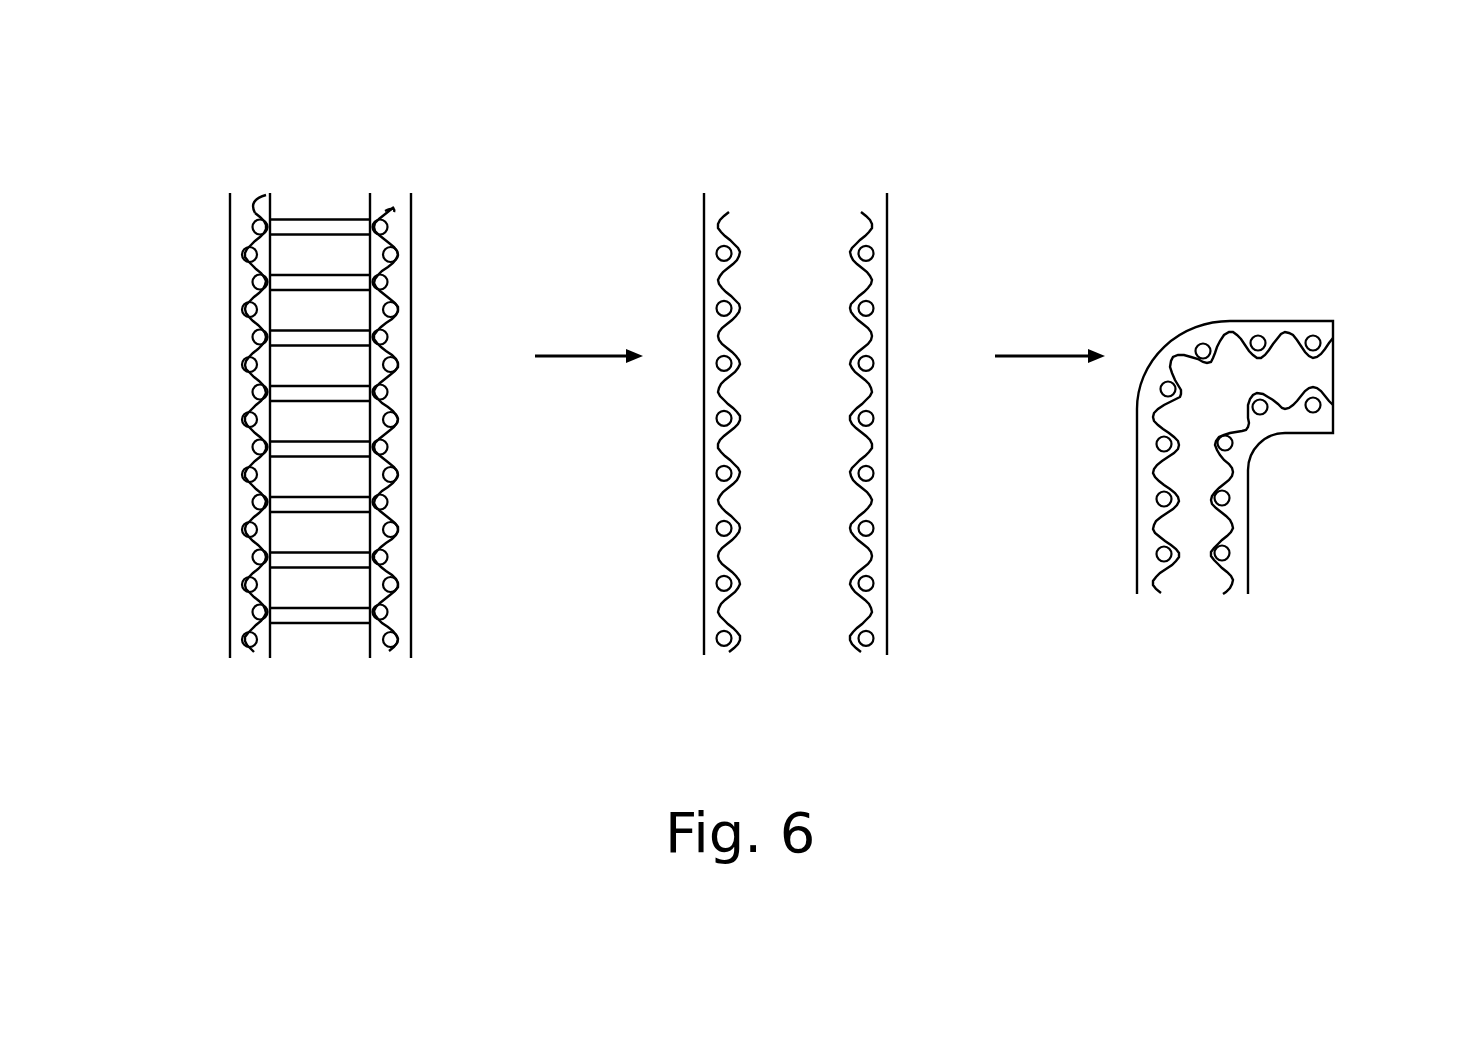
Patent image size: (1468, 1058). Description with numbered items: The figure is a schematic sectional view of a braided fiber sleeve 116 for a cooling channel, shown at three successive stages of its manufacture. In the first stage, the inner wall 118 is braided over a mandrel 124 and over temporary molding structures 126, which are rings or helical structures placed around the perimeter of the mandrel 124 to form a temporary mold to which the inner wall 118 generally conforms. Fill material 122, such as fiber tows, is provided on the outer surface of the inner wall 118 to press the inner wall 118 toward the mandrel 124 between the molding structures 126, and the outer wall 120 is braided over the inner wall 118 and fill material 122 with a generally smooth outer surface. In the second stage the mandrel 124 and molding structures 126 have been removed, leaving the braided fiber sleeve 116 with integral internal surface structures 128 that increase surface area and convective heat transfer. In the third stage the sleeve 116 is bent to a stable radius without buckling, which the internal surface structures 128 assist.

The braided fiber sleeve 116 is at (207, 264).
The inner wall 118 is at (255, 210).
The outer wall 120 is at (412, 248).
The fill material 122 is at (392, 419).
The mandrel 124 is at (258, 383).
The temporary molding structures 126 is at (258, 504).
The internal surface structures 128 is at (372, 584).